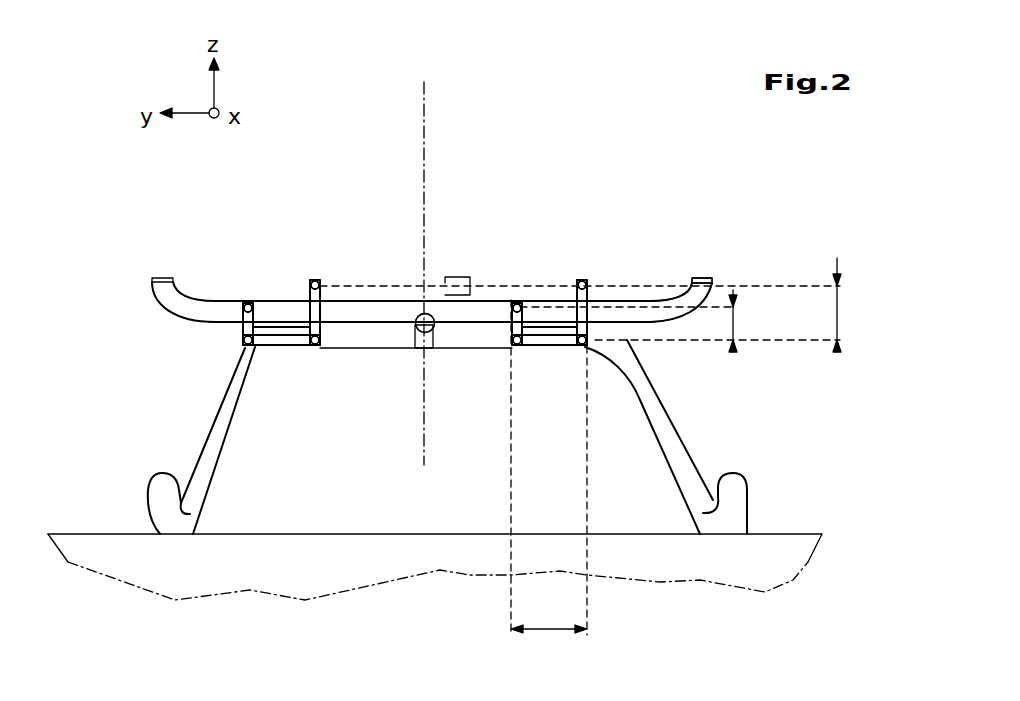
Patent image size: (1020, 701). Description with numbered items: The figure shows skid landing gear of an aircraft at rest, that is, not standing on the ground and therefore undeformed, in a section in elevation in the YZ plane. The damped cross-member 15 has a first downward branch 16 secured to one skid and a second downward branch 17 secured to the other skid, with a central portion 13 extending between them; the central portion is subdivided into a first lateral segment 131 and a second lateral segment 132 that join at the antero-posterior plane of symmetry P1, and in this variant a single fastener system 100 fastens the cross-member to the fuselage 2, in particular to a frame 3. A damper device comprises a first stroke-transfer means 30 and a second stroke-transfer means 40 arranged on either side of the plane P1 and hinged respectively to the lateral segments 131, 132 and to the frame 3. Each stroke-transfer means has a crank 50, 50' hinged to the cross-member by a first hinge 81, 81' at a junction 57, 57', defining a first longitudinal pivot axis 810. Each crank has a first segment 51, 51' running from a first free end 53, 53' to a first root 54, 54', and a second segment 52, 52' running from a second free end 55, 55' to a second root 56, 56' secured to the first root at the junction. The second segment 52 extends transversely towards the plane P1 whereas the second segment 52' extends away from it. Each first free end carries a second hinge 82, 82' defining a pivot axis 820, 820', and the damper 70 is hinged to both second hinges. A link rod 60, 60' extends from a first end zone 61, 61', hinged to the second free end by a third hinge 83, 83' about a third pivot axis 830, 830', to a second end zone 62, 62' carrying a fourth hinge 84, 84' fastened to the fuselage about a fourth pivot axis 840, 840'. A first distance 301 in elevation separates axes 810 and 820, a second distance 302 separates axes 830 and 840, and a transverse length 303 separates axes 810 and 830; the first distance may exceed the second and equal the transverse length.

The fuselage 2 is at (738, 240).
The frame 3 is at (700, 293).
The central portion 13 is at (385, 340).
The first lateral segment 131 is at (448, 340).
The second lateral segment 132 is at (383, 348).
The damped cross-member 15 is at (712, 417).
The first downward branch 16 is at (700, 470).
The second downward branch 17 is at (178, 462).
The first stroke-transfer means 30 is at (563, 372).
The second stroke-transfer means 40 is at (195, 462).
The crank 50 is at (601, 258).
The crank 50' is at (236, 357).
The first segment 51 is at (641, 292).
The first segment 51' is at (319, 243).
The second segment 52 is at (549, 432).
The second segment 52' is at (280, 419).
The first free end 53 is at (605, 234).
The first free end 53' is at (239, 240).
The first root 54 is at (549, 264).
The first root 54' is at (310, 253).
The second free end 55 is at (487, 403).
The second free end 55' is at (178, 378).
The second root 56 is at (572, 387).
The second root 56' is at (281, 435).
The junction 57 is at (625, 367).
The junction 57' is at (325, 283).
The link rod 60 is at (546, 247).
The link rod 60' is at (169, 318).
The first end zone 61 is at (482, 365).
The first end zone 61' is at (165, 333).
The second end zone 62 is at (504, 242).
The second end zone 62' is at (170, 285).
The damper 70 is at (470, 258).
The first hinge 81 is at (675, 365).
The first longitudinal pivot axis 810 is at (700, 365).
The first hinge 81' is at (322, 417).
The second hinge 82 is at (591, 212).
The second longitudinal pivot axis 820 is at (615, 212).
The second hinge 82' is at (263, 255).
The second longitudinal pivot axis 820' is at (263, 255).
The third hinge 83 is at (506, 432).
The third longitudinal pivot axis 830 is at (506, 432).
The third hinge 83' is at (182, 358).
The third longitudinal pivot axis 830' is at (182, 358).
The fourth hinge 84 is at (509, 231).
The fourth longitudinal pivot axis 840 is at (533, 231).
The fourth hinge 84' is at (158, 281).
The fourth longitudinal pivot axis 840' is at (158, 281).
The fastener system 100 is at (432, 312).
The first distance in elevation 301 is at (605, 305).
The second distance in elevation 302 is at (654, 321).
The transverse length 303 is at (549, 479).
The antero-posterior plane of symmetry P1 is at (425, 100).